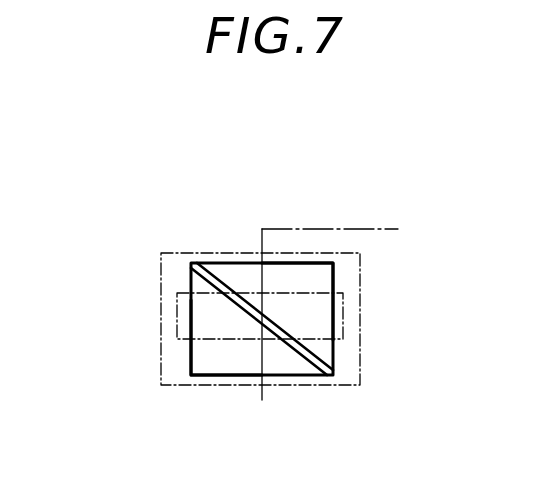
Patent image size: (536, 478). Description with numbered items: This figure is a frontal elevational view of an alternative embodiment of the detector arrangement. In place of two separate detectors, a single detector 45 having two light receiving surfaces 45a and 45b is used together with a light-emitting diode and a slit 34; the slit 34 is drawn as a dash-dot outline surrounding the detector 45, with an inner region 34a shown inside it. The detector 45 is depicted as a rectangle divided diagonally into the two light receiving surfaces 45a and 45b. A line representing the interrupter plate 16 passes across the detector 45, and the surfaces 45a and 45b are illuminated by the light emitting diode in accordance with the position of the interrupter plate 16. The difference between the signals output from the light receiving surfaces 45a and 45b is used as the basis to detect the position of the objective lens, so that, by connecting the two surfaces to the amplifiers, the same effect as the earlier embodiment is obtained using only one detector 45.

The interrupter plate 16 is at (353, 229).
The slit 34 is at (158, 363).
The opening of holder 34a is at (178, 296).
The detector 45 is at (224, 263).
The light receiving surface 45a is at (220, 362).
The light receiving surface 45b is at (282, 273).